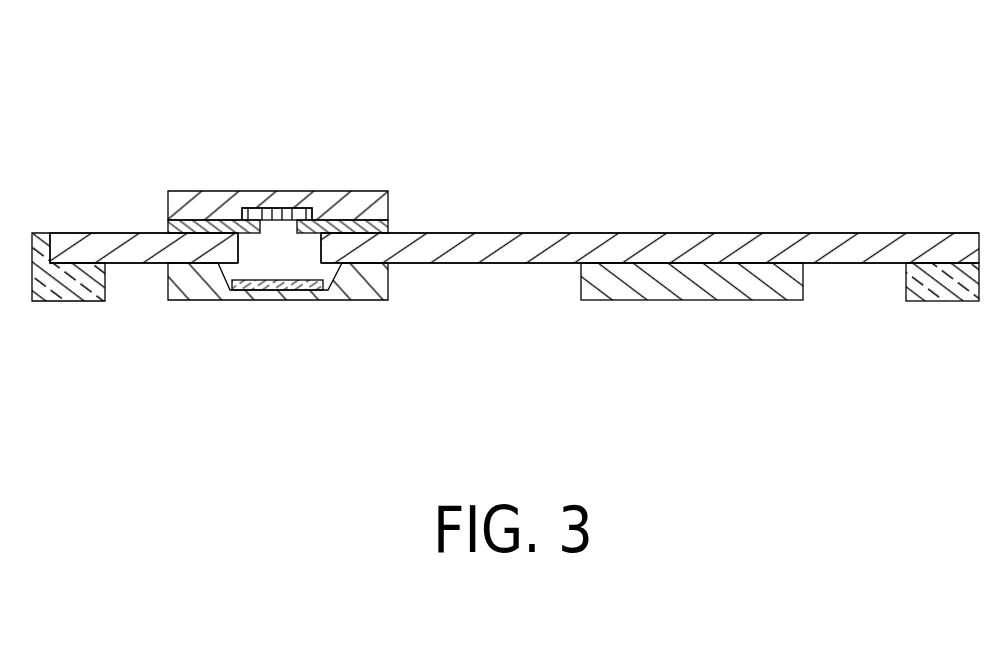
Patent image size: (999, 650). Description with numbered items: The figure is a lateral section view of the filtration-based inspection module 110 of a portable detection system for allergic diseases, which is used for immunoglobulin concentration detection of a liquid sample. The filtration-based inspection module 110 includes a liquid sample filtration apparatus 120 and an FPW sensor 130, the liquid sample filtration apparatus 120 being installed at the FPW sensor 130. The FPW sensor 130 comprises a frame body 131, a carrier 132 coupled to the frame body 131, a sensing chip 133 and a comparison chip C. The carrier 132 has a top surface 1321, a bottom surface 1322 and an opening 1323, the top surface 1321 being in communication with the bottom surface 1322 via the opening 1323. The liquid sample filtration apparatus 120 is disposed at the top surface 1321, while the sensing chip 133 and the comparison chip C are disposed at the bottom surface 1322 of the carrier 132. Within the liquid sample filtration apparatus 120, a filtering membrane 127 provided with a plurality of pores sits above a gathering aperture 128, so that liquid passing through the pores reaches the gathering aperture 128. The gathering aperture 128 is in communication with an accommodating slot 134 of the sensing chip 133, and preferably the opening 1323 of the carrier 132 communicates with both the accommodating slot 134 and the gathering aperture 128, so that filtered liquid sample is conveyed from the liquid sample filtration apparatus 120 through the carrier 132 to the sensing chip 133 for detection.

The filtration-based inspection module 110 is at (641, 80).
The liquid sample filtration apparatus 120 is at (372, 163).
The filtering membrane 127 is at (297, 213).
The gathering aperture 128 is at (268, 212).
The FPW sensor 130 is at (547, 362).
The frame body 131 is at (68, 285).
The carrier 132 is at (137, 240).
The top surface 1321 is at (88, 233).
The bottom surface 1322 is at (122, 265).
The opening 1323 is at (292, 250).
The sensing chip 133 is at (343, 302).
The accommodating slot 134 is at (262, 282).
The comparison chip C is at (692, 292).